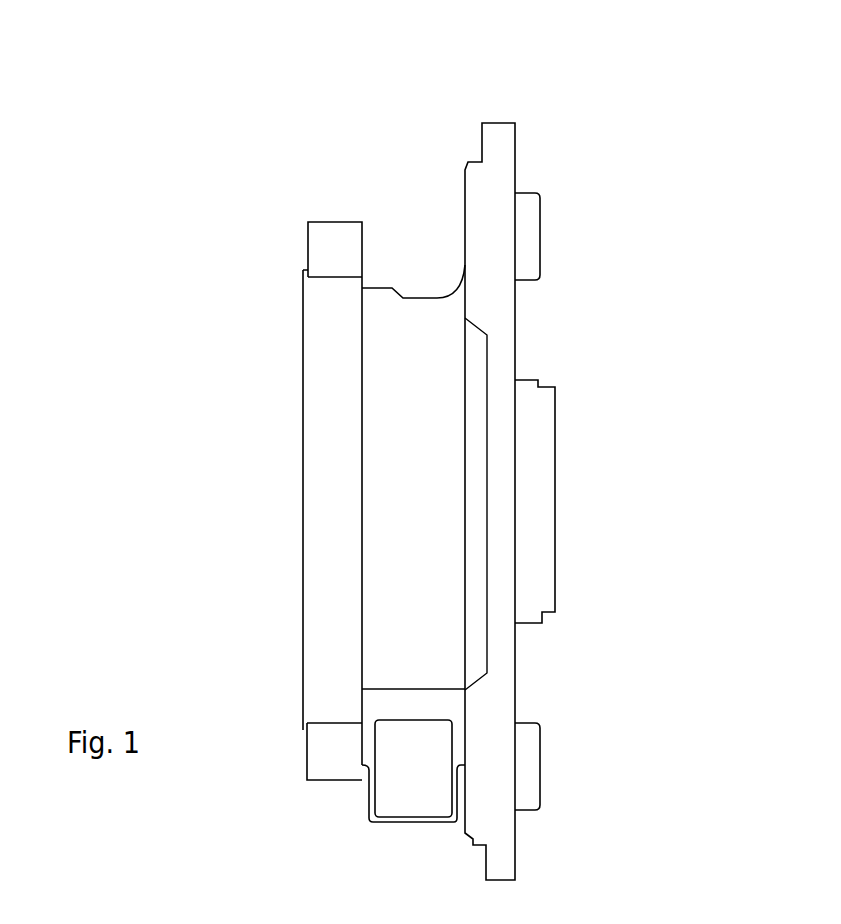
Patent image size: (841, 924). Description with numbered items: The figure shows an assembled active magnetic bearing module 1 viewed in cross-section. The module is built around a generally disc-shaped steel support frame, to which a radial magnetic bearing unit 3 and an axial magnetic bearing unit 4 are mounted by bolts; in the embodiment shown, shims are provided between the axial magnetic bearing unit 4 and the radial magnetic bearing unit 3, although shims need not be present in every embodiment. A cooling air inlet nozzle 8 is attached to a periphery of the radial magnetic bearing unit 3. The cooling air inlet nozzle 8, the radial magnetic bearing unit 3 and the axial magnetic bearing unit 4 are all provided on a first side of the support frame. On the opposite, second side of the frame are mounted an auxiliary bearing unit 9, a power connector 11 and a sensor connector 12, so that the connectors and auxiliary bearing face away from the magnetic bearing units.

The active magnetic bearing module 1 is at (582, 110).
The radial magnetic bearing unit 3 is at (412, 240).
The axial magnetic bearing unit 4 is at (291, 238).
The cooling air inlet nozzle 8 is at (372, 817).
The auxiliary bearing unit 9 is at (552, 400).
The power connector 11 is at (539, 228).
The sensor connector 12 is at (540, 782).